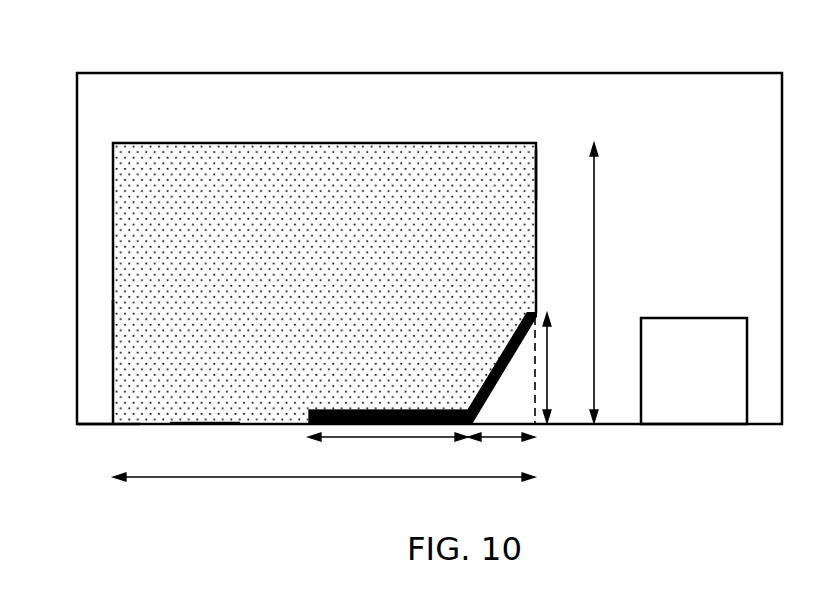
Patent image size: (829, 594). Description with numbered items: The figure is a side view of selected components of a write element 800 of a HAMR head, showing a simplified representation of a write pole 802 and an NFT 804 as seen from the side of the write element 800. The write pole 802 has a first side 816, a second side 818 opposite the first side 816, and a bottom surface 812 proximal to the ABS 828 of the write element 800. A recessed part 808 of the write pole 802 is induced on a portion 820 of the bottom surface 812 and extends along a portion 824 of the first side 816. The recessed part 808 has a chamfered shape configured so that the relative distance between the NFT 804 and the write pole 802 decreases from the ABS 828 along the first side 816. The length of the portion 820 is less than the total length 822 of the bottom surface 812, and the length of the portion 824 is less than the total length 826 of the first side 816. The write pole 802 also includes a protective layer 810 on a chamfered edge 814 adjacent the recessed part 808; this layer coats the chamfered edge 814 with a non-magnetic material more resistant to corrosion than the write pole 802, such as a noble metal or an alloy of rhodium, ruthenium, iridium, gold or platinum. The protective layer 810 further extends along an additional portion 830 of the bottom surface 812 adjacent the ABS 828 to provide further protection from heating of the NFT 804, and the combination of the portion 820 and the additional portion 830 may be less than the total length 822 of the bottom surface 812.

The write element 800 is at (448, 73).
The write pole 802 is at (252, 143).
The NFT 804 is at (677, 318).
The recessed part 808 is at (510, 383).
The protective layer 810 is at (370, 410).
The bottom surface 812 is at (200, 416).
The chamfered edge 814 is at (522, 330).
The first side 816 is at (542, 176).
The second side 818 is at (118, 326).
The portion of the bottom surface 820 is at (501, 454).
The total length of the bottom surface 822 is at (324, 490).
The portion of the first side 824 is at (562, 368).
The total length of the first side 826 is at (612, 283).
The ABS 828 is at (100, 424).
The additional portion of the bottom surface 830 is at (388, 454).